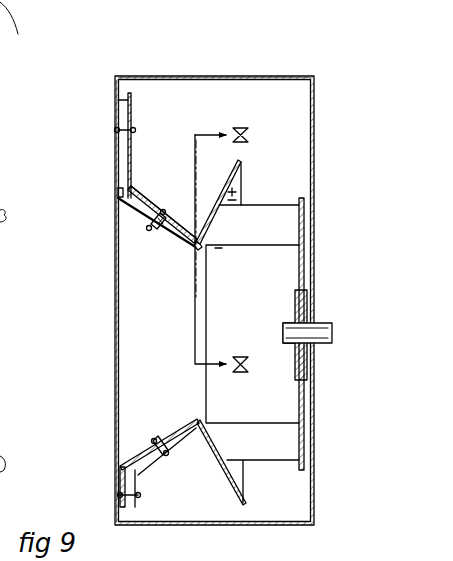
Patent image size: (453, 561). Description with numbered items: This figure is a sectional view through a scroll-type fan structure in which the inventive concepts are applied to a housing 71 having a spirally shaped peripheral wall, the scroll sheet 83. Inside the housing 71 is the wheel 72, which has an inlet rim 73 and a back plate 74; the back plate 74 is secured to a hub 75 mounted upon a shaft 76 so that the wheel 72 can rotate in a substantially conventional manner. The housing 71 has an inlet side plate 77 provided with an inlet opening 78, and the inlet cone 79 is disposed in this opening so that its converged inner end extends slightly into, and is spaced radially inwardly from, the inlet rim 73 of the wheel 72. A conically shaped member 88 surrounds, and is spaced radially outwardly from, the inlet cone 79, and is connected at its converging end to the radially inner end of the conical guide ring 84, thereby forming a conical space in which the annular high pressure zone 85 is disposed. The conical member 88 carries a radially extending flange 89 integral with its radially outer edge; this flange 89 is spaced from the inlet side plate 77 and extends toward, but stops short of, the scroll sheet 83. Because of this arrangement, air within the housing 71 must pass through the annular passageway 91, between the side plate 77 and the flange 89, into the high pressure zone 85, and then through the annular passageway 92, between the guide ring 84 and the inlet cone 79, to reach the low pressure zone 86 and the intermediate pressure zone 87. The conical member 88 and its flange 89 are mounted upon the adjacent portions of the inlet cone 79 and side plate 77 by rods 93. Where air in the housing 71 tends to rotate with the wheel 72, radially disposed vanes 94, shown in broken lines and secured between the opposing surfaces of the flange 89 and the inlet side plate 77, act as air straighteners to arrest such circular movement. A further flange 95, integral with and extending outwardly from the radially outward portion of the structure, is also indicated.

The scroll-type housing 71 is at (232, 77).
The scroll sheet 83 is at (163, 76).
The inlet opening 78 is at (118, 272).
The annular passageway 91 is at (128, 180).
The vanes 94 is at (127, 98).
The radially extending flange 89 is at (133, 134).
The flange 95 is at (118, 192).
The conically shaped member 88 is at (136, 196).
The conical guide ring 84 is at (237, 190).
The inlet cone 79 is at (132, 204).
The high pressure zone 85 is at (182, 246).
The intermediate pressure zone 87 is at (242, 195).
The low pressure zone 86 is at (214, 258).
The wheel 72 is at (270, 205).
The inlet rim 73 is at (219, 227).
The back plate 74 is at (300, 252).
The hub 75 is at (292, 350).
The shaft 76 is at (290, 330).
The annular passageway 92 is at (200, 418).
The rods 93 is at (168, 437).
The inlet side plate 77 is at (118, 502).